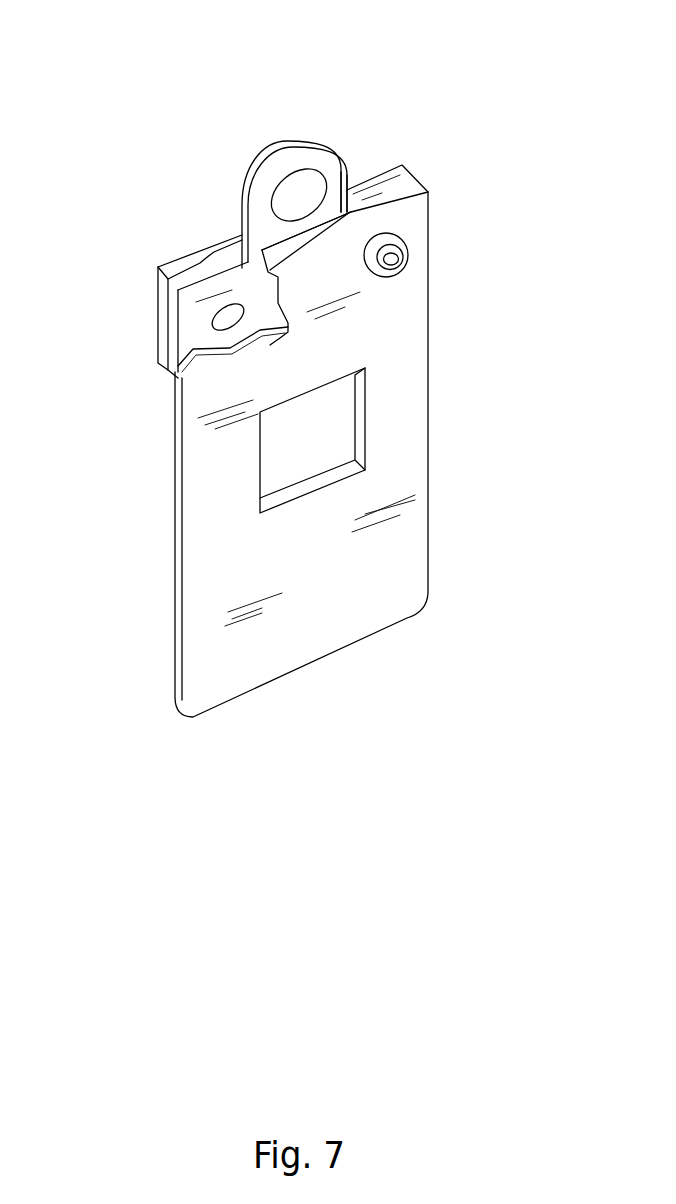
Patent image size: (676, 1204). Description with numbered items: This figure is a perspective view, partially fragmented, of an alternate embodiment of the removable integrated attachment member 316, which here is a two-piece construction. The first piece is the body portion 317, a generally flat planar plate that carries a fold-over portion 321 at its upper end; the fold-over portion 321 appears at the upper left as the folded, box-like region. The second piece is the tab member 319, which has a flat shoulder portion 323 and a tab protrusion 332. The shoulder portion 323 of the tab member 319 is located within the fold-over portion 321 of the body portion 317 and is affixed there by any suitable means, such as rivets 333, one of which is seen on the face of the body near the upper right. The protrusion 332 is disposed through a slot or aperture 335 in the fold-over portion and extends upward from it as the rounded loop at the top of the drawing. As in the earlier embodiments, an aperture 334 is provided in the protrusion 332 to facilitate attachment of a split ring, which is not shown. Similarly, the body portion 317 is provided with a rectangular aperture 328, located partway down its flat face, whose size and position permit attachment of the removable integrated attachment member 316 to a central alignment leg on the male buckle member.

The removable integrated attachment member 316 is at (413, 557).
The body portion 317 is at (377, 323).
The tab member 319 is at (303, 147).
The fold-over portion 321 is at (158, 310).
The shoulder portion 323 is at (200, 330).
The aperture 328 is at (283, 467).
The tab protrusion 332 is at (268, 170).
The rivets 333 is at (409, 241).
The aperture 334 is at (352, 168).
The slot or aperture 335 is at (275, 237).